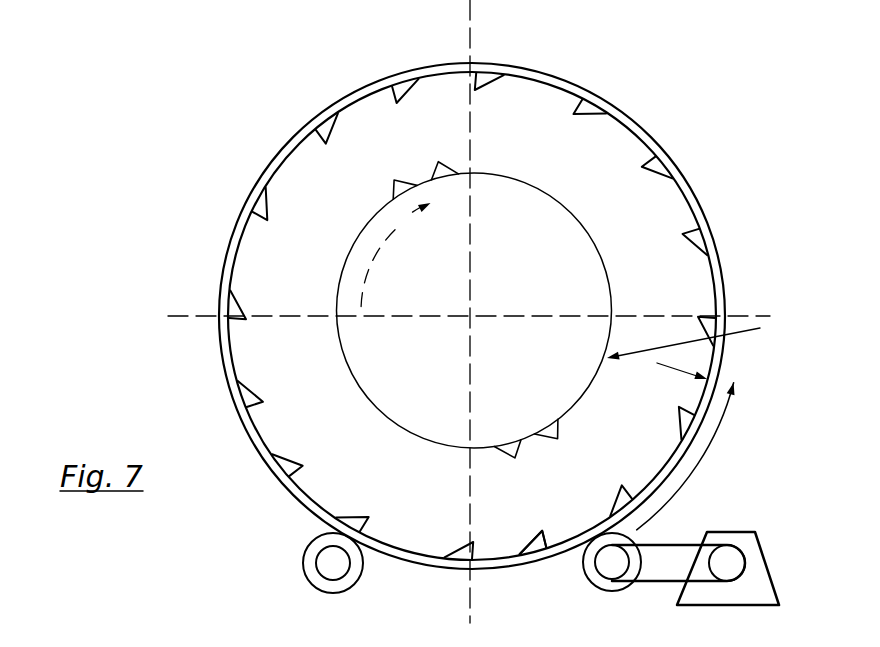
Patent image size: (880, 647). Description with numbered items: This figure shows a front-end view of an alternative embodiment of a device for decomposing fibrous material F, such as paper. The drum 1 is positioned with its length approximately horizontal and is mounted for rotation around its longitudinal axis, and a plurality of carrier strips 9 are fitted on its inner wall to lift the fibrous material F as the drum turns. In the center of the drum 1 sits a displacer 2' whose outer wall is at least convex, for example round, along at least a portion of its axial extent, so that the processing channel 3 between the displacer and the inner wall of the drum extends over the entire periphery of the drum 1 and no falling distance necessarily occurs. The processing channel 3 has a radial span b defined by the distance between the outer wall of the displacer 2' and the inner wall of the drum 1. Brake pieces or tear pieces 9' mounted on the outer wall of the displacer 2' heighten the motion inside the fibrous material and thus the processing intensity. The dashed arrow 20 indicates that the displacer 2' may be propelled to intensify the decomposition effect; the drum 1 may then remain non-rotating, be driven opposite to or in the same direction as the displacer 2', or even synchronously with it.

The drum 1 is at (562, 82).
The processing channel 3 is at (300, 247).
The carrier strips 9 is at (552, 588).
The brake pieces or tear pieces 9' is at (395, 279).
The displacer 2' is at (474, 310).
The dashed arrow 20 is at (393, 229).
The radial span b is at (701, 346).
The fibrous material F is at (358, 458).